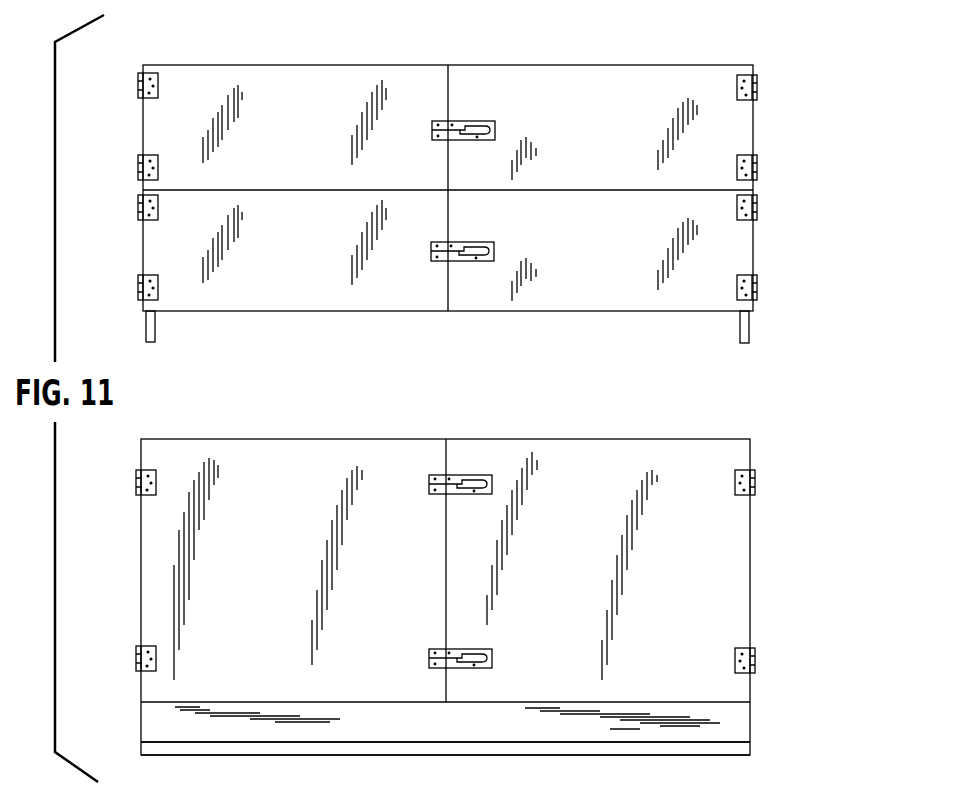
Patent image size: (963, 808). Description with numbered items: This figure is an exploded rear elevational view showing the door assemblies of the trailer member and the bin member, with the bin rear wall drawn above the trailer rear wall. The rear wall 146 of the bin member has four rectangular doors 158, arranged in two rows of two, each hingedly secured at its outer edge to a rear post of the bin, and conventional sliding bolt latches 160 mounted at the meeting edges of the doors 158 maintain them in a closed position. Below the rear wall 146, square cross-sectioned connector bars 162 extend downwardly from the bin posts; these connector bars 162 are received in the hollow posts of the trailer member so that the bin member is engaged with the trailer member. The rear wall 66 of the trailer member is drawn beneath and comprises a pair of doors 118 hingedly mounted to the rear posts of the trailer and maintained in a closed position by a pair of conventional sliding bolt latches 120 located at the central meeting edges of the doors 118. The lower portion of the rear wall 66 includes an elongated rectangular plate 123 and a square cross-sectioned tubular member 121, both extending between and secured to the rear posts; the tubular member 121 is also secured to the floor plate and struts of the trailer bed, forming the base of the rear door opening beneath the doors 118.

The rear wall 146 is at (622, 68).
The rectangular doors 158 is at (313, 147).
The sliding bolt latches 160 is at (497, 130).
The connector bars 162 is at (156, 338).
The rear wall 66 is at (623, 438).
The doors 118 is at (307, 570).
The sliding bolt latches 120 is at (477, 497).
The elongated rectangular plate 123 is at (745, 725).
The tubular member 121 is at (745, 748).